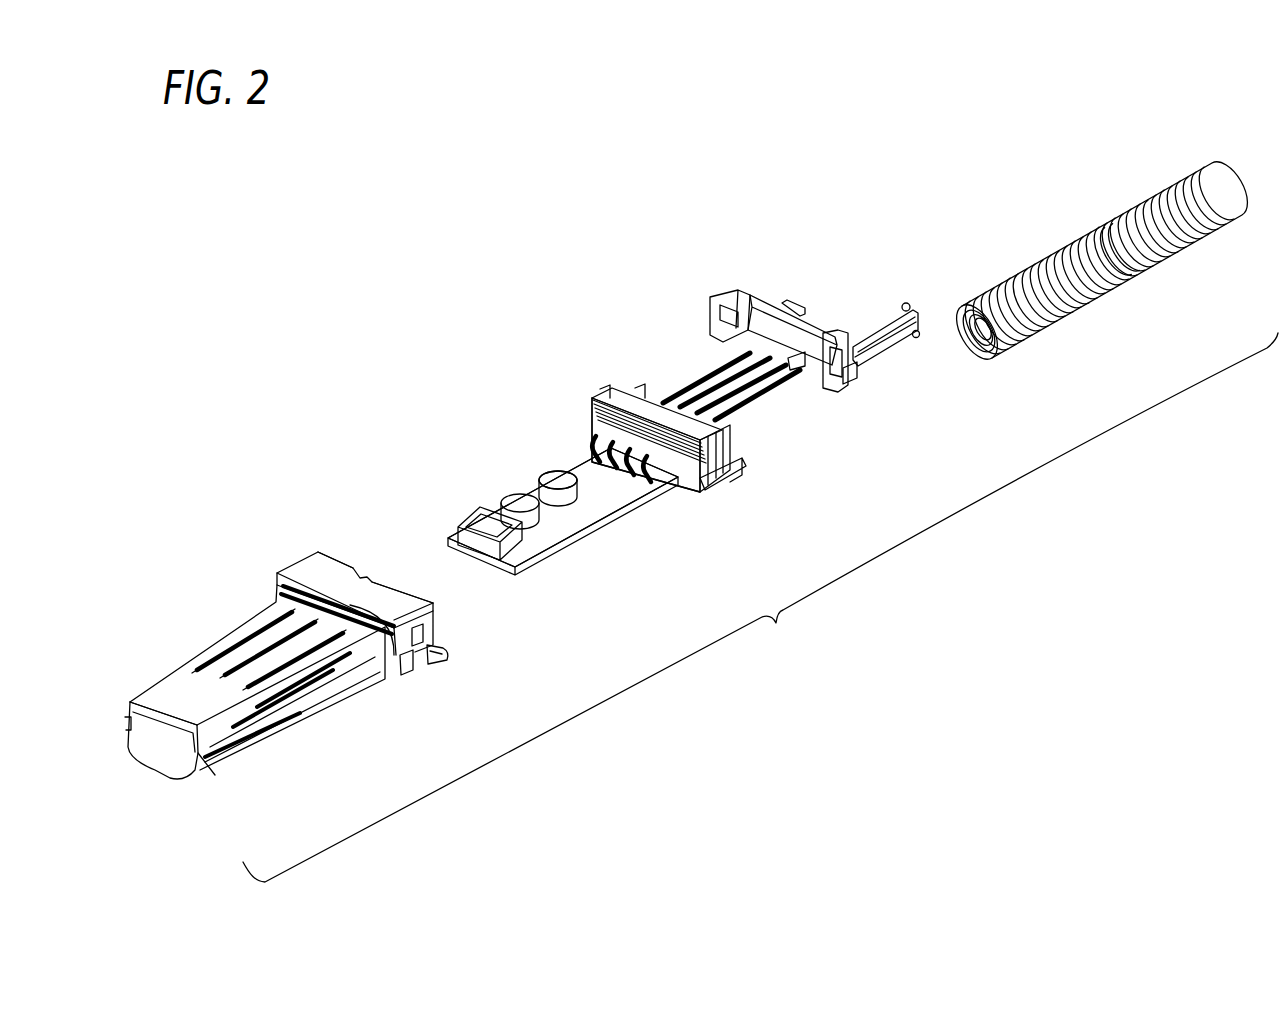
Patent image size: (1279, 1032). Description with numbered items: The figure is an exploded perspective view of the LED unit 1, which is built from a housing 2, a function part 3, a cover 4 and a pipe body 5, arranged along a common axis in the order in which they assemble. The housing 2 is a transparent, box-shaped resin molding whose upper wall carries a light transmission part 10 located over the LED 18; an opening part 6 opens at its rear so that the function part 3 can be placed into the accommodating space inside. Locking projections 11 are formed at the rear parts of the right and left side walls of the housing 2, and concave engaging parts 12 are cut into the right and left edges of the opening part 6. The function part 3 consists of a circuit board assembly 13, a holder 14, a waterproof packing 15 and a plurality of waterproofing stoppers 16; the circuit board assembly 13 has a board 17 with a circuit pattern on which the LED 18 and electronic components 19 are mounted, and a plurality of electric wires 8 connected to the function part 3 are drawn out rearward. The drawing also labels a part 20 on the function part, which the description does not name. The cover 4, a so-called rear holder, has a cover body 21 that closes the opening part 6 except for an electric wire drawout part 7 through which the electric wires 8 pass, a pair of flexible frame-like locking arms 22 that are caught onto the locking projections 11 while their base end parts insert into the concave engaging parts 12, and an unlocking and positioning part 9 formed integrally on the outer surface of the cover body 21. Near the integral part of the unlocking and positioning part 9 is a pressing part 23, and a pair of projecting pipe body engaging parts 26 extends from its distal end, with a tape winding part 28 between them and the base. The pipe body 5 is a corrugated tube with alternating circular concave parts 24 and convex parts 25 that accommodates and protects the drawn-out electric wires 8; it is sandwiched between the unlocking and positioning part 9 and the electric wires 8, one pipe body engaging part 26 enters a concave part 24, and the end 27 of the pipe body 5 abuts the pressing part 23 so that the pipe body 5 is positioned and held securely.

The LED unit 1 is at (381, 336).
The housing 2 is at (303, 572).
The function part 3 is at (590, 547).
The cover 4 is at (763, 297).
The pipe body 5 is at (1114, 218).
The opening part 6 is at (400, 596).
The electric wire drawout part 7 is at (732, 455).
The electric wires 8 is at (703, 378).
The unlocking and positioning part 9 is at (890, 330).
The light transmission part 10 is at (175, 712).
The locking projections 11 is at (437, 665).
The concave engaging parts 12 is at (433, 643).
The circuit board assembly 13 is at (557, 549).
The holder 14 is at (663, 485).
The waterproof packing 15 is at (625, 396).
The waterproofing stoppers 16 is at (650, 477).
The board 17 is at (578, 464).
The LED 18 is at (493, 527).
The electronic components 19 is at (550, 478).
The connector cover 20 is at (598, 423).
The cover body 21 is at (827, 327).
The locking arms 22 is at (718, 292).
The pressing part 23 is at (860, 375).
The concave parts 24 is at (1123, 273).
The convex parts 25 is at (1127, 275).
The pipe body engaging parts 26 is at (908, 303).
The end of the pipe body 27 is at (987, 355).
The tape winding part 28 is at (867, 341).